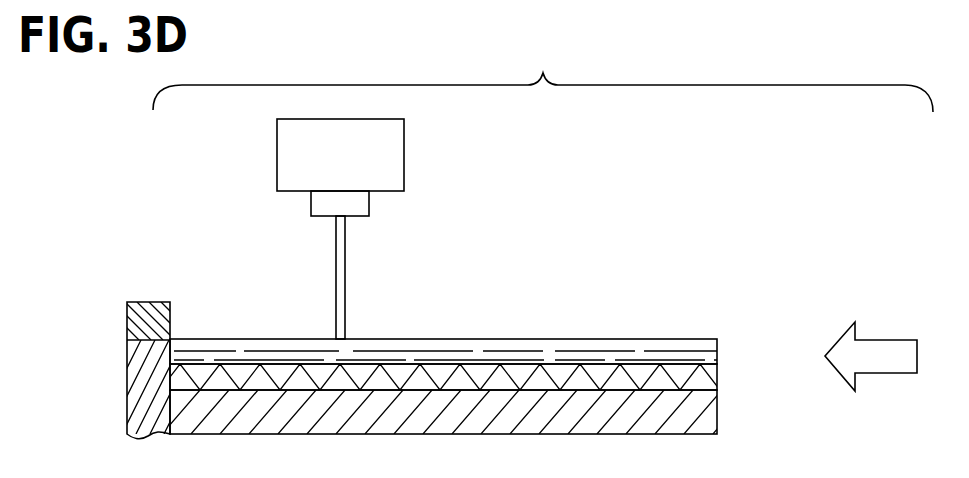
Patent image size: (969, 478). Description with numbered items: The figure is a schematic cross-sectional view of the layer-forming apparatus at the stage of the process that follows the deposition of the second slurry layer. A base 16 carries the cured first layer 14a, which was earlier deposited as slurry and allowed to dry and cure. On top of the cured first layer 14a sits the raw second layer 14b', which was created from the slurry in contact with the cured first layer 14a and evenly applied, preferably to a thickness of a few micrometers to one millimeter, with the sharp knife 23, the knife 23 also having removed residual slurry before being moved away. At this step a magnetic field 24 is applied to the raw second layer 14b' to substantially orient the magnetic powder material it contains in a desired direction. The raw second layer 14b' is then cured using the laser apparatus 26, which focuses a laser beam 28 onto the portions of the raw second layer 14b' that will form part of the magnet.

The cured first layer 14a is at (717, 359).
The raw second layer 14b' is at (502, 339).
The base 16 is at (700, 418).
The knife 23 is at (127, 302).
The magnetic field 24 is at (887, 340).
The laser apparatus 26 is at (426, 163).
The laser beam 28 is at (342, 256).